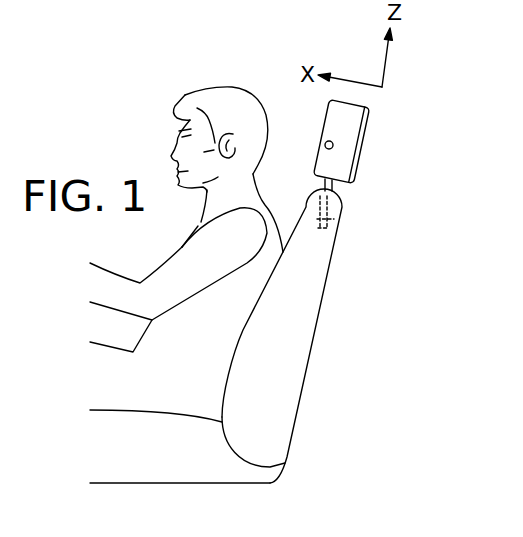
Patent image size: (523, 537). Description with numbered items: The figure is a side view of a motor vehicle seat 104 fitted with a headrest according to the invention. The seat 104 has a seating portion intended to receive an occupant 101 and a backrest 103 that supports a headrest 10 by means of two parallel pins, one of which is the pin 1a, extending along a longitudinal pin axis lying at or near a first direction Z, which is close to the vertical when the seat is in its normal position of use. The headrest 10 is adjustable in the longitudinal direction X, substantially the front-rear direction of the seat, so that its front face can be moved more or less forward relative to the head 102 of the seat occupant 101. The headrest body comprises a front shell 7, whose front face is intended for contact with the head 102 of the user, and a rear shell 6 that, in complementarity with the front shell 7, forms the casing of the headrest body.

The occupant 101 is at (263, 76).
The head 102 is at (250, 120).
The headrest 10 is at (382, 119).
The rear shell 6 is at (366, 143).
The front shell 7 is at (320, 163).
The pin 1a is at (342, 225).
The backrest 103 is at (331, 339).
The seat 104 is at (314, 416).